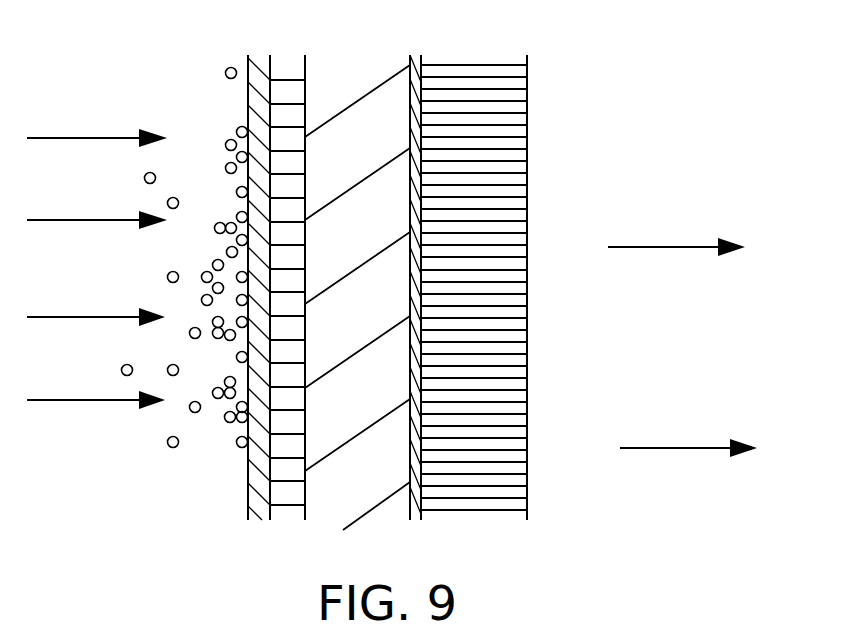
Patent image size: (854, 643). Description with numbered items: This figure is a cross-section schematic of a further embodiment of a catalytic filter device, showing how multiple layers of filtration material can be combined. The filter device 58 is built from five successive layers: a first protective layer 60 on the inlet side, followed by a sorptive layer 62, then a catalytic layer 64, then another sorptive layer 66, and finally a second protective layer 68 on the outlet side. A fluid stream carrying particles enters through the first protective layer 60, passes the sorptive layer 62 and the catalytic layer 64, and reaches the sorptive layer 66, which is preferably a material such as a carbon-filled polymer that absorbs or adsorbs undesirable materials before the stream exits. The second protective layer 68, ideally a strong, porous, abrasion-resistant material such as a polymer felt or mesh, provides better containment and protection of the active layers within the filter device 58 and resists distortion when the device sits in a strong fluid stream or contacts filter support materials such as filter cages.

The filter device 58 is at (371, 280).
The first protective layer 60 is at (257, 470).
The sorptive layer 62 is at (297, 497).
The catalytic layer 64 is at (365, 495).
The sorptive layer 66 is at (418, 507).
The second protective layer 68 is at (483, 498).